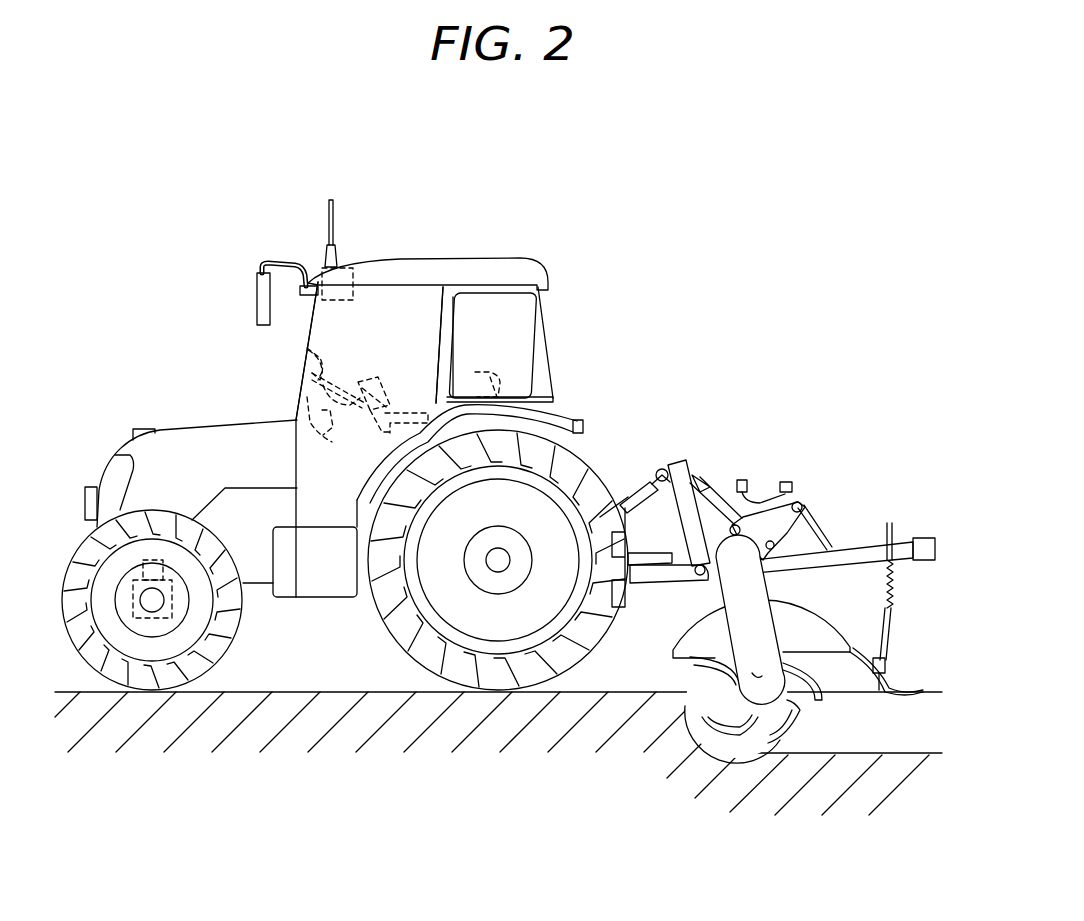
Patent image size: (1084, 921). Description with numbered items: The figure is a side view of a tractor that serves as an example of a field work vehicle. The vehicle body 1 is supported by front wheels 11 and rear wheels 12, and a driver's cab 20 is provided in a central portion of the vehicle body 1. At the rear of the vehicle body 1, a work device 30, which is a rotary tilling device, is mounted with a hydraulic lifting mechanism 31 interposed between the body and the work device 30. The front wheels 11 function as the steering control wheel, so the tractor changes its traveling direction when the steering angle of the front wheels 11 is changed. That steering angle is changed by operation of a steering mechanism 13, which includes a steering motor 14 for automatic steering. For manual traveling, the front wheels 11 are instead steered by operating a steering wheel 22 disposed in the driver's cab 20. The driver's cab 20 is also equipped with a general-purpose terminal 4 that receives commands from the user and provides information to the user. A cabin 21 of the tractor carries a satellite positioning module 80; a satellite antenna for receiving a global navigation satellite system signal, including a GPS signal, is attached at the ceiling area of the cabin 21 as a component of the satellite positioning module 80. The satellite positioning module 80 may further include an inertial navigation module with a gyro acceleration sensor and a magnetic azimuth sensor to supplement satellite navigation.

The vehicle body 1 is at (170, 313).
The general-purpose terminal 4 is at (378, 378).
The front wheels 11 is at (148, 693).
The rear wheels 12 is at (509, 668).
The steering mechanism 13 is at (178, 620).
The steering motor 14 is at (130, 568).
The driver's cab 20 is at (380, 343).
The cabin 21 is at (523, 268).
The steering wheel 22 is at (307, 348).
The work device 30 is at (831, 480).
The hydraulic lifting mechanism 31 is at (714, 466).
The satellite positioning module 80 is at (354, 265).